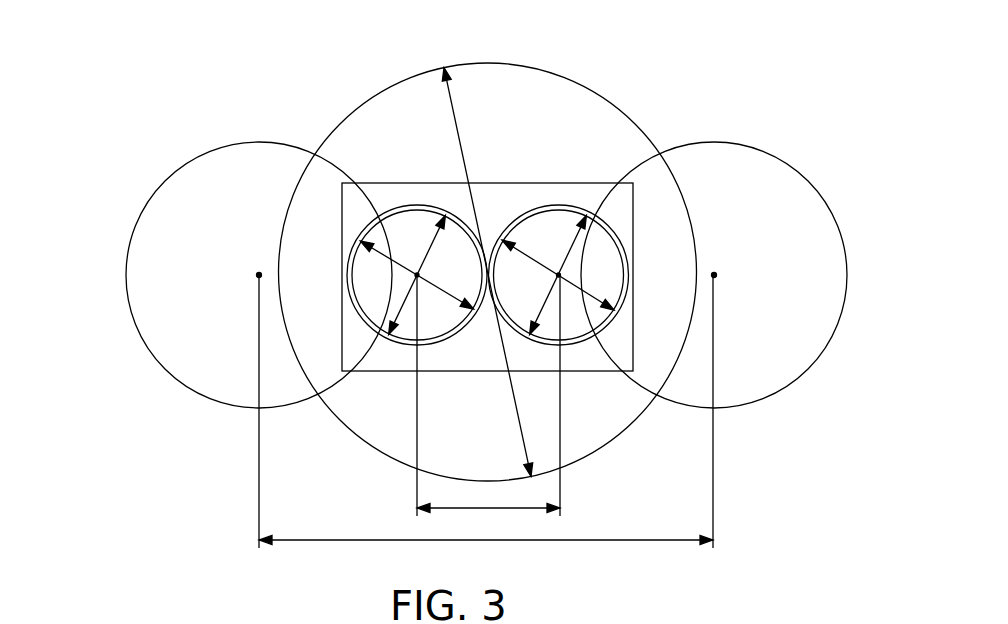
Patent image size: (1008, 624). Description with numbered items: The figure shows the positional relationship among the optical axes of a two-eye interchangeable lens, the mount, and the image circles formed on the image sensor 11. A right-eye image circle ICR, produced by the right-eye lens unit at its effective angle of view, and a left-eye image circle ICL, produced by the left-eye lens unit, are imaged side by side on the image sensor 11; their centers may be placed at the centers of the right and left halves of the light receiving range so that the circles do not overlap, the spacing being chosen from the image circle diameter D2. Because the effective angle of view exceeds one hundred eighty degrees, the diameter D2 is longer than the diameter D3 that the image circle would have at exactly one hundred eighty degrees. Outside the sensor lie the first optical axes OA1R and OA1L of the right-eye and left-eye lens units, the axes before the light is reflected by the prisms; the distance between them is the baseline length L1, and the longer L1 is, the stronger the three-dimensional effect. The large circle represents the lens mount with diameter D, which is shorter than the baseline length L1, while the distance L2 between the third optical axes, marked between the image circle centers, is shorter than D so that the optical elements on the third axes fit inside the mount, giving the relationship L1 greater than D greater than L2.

The image sensor 11 is at (541, 183).
The right-eye image circle ICR is at (429, 240).
The left-eye image circle ICL is at (558, 275).
The first optical axis of the right-eye lens unit OA1R is at (250, 285).
The first optical axis of the left-eye lens unit OA1L is at (723, 285).
The diameter of the lens mount D is at (487, 272).
The diameter of the image circle D2 is at (434, 237).
The diameter of the image circle at 180-degree angle of view D3 is at (380, 254).
The baseline length L1 is at (486, 530).
The distance between the third optical axes L2 is at (488, 395).